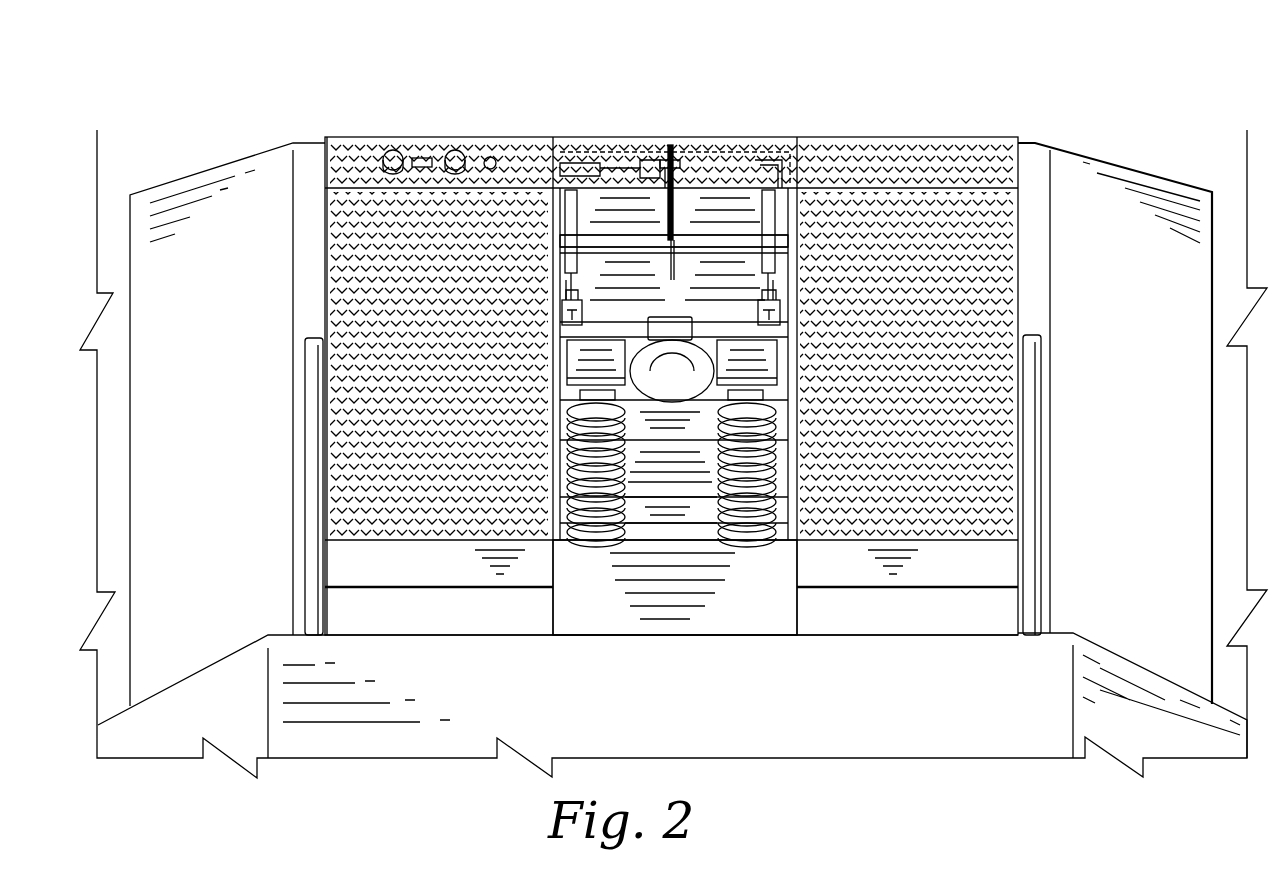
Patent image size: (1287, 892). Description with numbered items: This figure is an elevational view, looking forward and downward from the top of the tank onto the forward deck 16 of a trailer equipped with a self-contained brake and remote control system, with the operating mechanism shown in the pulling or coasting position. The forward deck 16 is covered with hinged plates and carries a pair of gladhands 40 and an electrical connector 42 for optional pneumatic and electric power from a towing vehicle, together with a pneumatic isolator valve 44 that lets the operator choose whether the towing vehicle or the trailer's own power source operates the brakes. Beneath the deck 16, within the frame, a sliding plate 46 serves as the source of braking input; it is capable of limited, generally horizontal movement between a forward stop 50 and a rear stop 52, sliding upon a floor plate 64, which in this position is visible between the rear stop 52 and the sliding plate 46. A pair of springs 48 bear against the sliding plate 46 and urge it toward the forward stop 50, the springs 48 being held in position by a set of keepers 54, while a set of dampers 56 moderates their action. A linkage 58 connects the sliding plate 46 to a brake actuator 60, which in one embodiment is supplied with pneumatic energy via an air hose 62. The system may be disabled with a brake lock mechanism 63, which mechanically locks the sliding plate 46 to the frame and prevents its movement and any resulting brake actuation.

The forward deck 16 is at (913, 230).
The gladhands 40 is at (392, 151).
The electrical connector 42 is at (424, 156).
The pneumatic isolator valve 44 is at (491, 157).
The sliding plate 46 is at (768, 158).
The springs 48 is at (595, 540).
The forward stop 50 is at (597, 240).
The rear stop 52 is at (685, 530).
The keepers 54 is at (672, 371).
The dampers 56 is at (573, 217).
The linkage 58 is at (683, 272).
The brake actuator 60 is at (652, 160).
The air hose 62 is at (567, 147).
The brake lock mechanism 63 is at (793, 332).
The floor plate 64 is at (648, 505).